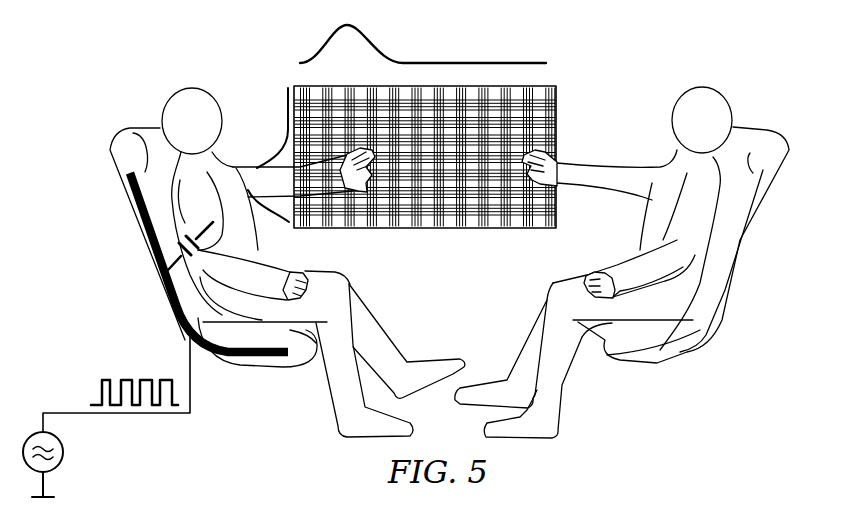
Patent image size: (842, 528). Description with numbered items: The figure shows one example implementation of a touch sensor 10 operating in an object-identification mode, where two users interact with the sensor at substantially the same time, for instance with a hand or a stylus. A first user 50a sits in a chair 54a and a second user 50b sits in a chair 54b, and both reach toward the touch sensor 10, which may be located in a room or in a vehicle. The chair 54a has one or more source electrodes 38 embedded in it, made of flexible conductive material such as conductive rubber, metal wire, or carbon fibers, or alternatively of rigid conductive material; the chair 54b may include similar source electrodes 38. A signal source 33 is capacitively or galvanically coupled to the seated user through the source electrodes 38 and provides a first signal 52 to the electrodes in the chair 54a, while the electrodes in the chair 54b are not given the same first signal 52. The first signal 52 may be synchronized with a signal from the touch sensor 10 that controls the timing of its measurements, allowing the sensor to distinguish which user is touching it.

The touch sensor 10 is at (556, 92).
The signal source 33 is at (62, 463).
The source electrodes 38 is at (165, 288).
The user 50a is at (182, 89).
The user 50b is at (713, 86).
The first signal 52 is at (100, 387).
The chair 54a is at (143, 256).
The chair 54b is at (750, 252).